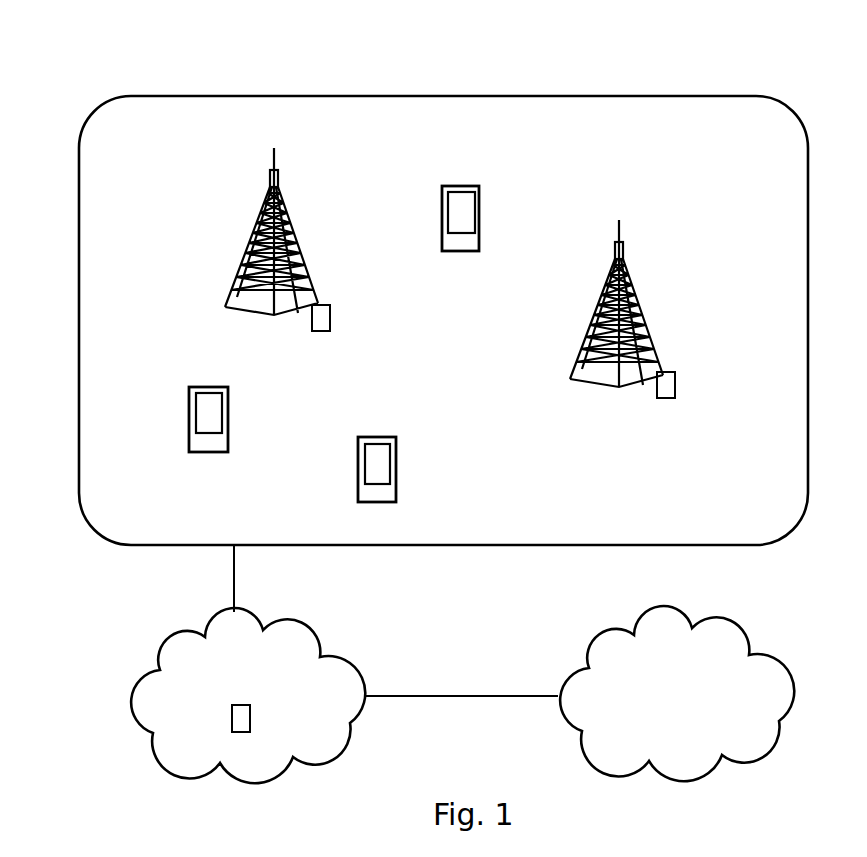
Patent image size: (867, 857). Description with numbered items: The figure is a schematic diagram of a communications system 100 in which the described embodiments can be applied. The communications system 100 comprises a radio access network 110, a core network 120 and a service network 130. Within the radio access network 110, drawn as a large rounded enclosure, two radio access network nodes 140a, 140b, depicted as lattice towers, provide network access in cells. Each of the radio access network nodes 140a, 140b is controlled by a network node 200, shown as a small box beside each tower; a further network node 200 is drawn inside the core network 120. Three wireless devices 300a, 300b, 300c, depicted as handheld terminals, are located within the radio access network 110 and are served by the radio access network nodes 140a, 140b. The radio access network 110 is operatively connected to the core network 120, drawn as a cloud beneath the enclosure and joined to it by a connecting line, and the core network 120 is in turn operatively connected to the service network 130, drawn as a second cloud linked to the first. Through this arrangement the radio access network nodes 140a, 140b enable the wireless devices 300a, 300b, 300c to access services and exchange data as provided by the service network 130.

The communications system 100 is at (160, 58).
The radio access network 110 is at (773, 141).
The core network 120 is at (227, 687).
The service network 130 is at (702, 709).
The radio access network node 140a is at (272, 162).
The radio access network node 140b is at (621, 232).
The network node 200 is at (330, 318).
The wireless device 300a is at (228, 422).
The wireless device 300b is at (396, 472).
The wireless device 300c is at (479, 218).